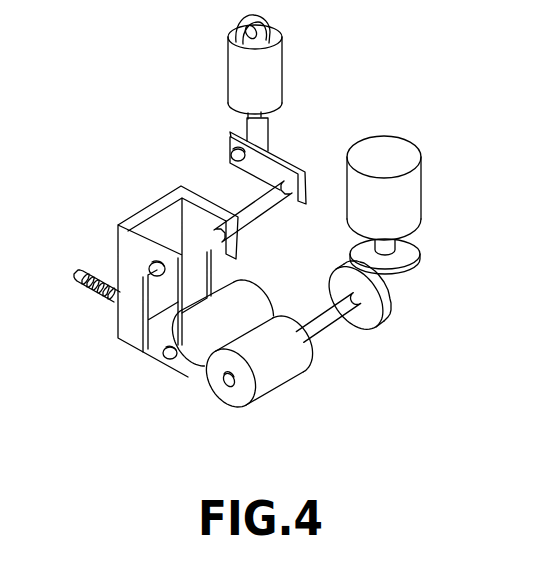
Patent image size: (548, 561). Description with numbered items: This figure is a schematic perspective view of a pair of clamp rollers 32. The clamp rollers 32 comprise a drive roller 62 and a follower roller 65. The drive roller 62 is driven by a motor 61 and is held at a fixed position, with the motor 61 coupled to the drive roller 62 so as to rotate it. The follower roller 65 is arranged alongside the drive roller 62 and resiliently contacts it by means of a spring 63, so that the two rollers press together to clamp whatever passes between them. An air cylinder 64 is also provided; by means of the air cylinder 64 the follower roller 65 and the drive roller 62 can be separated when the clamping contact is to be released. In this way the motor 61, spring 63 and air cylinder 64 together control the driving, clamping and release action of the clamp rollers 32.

The clamp rollers 32 is at (248, 418).
The motor 61 is at (413, 197).
The drive roller 62 is at (282, 367).
The spring 63 is at (95, 296).
The air cylinder 64 is at (240, 82).
The follower roller 65 is at (190, 375).